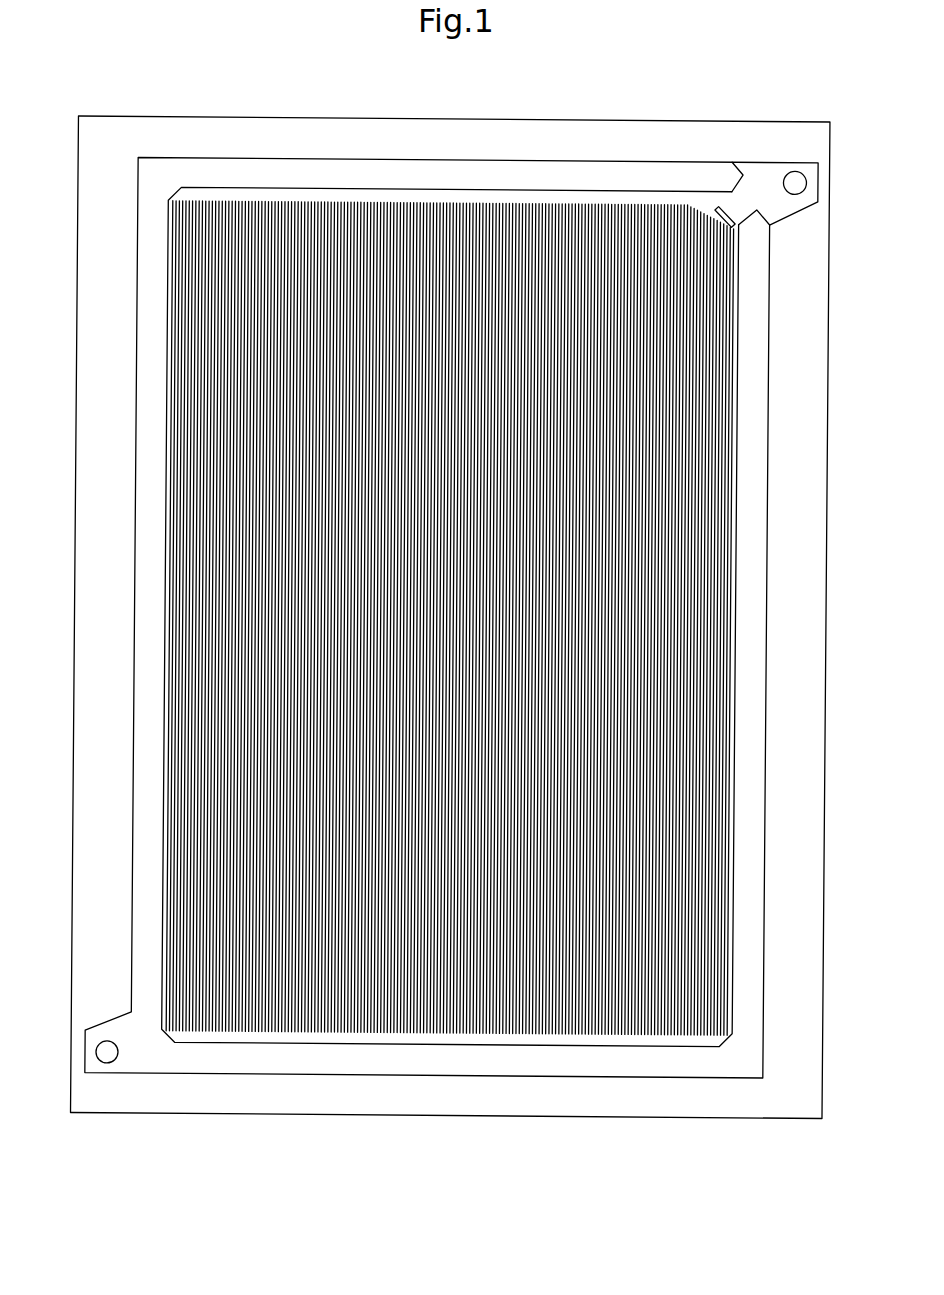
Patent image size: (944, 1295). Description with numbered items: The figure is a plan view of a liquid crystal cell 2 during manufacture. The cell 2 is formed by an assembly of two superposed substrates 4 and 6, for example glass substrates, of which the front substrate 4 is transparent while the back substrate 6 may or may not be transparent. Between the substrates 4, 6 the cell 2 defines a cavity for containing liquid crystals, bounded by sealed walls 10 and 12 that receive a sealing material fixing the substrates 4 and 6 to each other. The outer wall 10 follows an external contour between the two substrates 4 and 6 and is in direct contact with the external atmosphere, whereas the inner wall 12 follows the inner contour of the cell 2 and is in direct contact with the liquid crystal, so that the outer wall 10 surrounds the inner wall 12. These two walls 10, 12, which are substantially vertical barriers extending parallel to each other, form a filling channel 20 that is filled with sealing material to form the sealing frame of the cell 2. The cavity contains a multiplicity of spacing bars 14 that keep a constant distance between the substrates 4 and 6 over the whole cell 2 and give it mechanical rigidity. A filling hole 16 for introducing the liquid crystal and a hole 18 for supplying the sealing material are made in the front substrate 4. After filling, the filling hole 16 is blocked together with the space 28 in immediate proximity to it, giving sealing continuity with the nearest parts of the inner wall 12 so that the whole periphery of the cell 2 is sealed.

The liquid crystal cell 2 is at (453, 602).
The front substrate 4 is at (426, 136).
The back substrate 6 is at (450, 591).
The outer sealed wall 10 is at (645, 161).
The inner sealed wall 12 is at (258, 188).
The spacing bars 14 is at (207, 475).
The filling hole 16 is at (795, 183).
The sealing material supply hole 18 is at (107, 1052).
The filling channel 20 is at (700, 183).
The space 28 is at (765, 183).